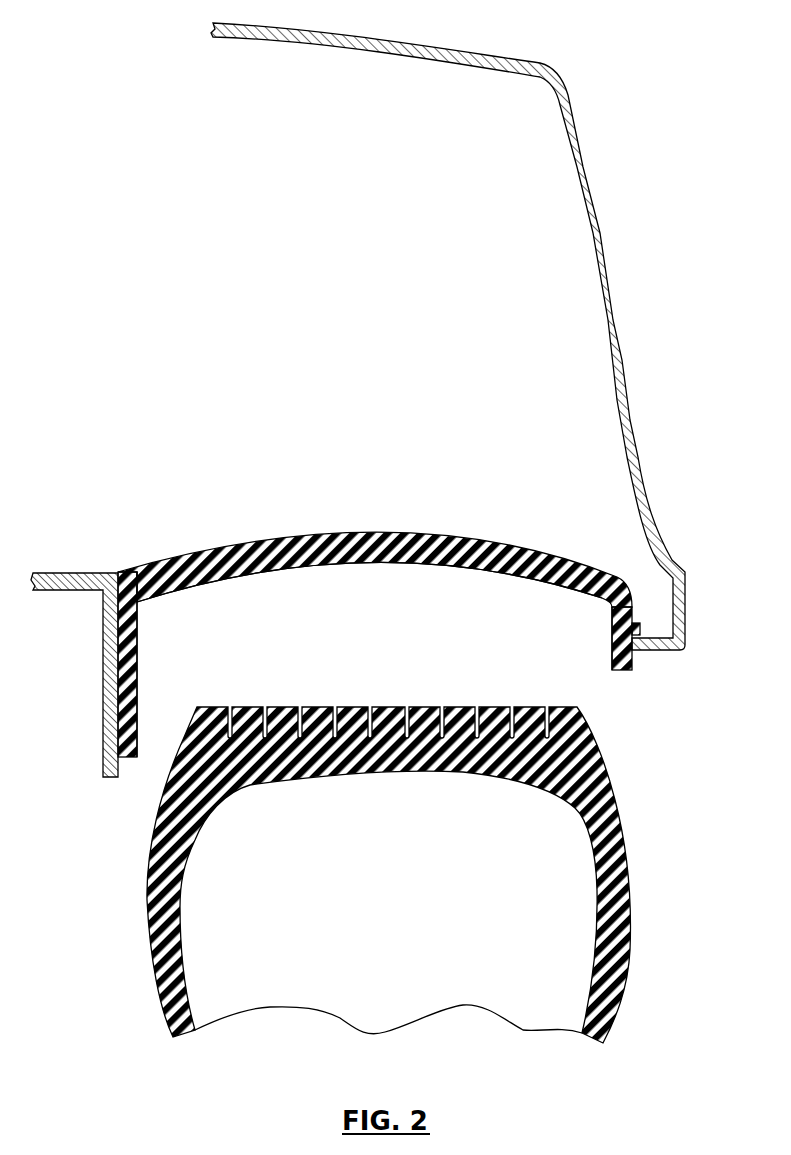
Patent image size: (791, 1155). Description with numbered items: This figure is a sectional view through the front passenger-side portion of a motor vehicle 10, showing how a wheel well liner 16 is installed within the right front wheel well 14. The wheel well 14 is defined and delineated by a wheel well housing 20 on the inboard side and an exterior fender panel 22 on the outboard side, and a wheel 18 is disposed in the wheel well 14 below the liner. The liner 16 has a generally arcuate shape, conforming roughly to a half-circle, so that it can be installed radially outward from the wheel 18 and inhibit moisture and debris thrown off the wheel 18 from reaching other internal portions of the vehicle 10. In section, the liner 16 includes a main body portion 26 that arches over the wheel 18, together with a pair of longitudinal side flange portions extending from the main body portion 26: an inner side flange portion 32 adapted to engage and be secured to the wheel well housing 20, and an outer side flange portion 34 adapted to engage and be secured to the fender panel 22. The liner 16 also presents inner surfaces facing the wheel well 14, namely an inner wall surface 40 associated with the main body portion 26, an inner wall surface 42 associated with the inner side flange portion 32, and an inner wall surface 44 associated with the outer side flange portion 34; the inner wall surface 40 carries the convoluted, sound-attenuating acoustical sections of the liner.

The motor vehicle 10 is at (658, 81).
The wheel well 14 is at (418, 624).
The wheel well liner 16 is at (288, 540).
The wheel 18 is at (630, 905).
The wheel well housing 20 is at (102, 760).
The exterior fender panel 22 is at (620, 312).
The main body portion 26 is at (328, 537).
The inner side flange portion 32 is at (127, 630).
The outer side flange portion 34 is at (620, 672).
The inner wall surface 40 is at (300, 570).
The inner wall surface 42 is at (137, 651).
The inner wall surface 44 is at (612, 636).